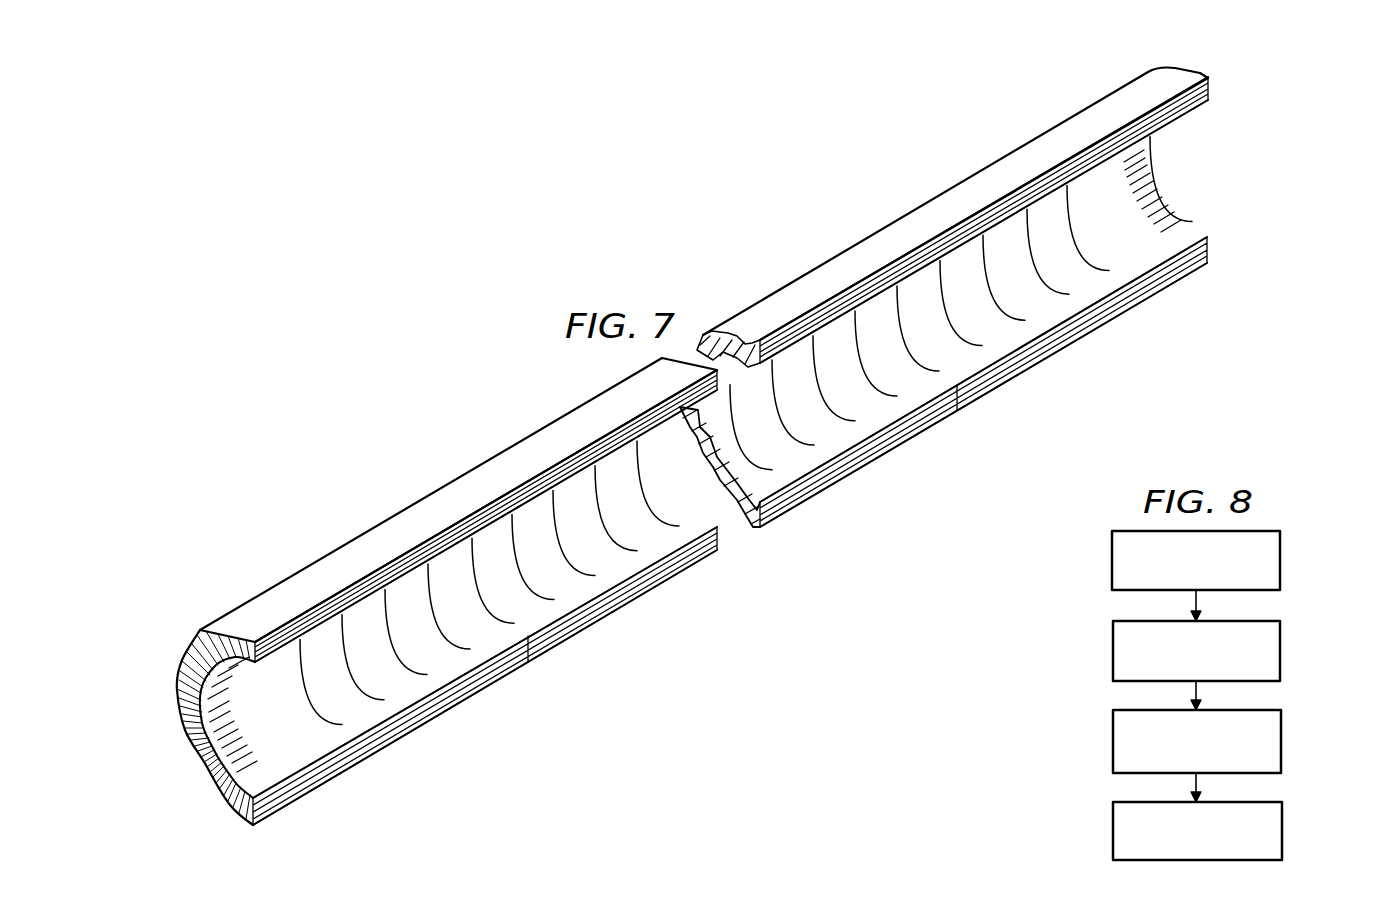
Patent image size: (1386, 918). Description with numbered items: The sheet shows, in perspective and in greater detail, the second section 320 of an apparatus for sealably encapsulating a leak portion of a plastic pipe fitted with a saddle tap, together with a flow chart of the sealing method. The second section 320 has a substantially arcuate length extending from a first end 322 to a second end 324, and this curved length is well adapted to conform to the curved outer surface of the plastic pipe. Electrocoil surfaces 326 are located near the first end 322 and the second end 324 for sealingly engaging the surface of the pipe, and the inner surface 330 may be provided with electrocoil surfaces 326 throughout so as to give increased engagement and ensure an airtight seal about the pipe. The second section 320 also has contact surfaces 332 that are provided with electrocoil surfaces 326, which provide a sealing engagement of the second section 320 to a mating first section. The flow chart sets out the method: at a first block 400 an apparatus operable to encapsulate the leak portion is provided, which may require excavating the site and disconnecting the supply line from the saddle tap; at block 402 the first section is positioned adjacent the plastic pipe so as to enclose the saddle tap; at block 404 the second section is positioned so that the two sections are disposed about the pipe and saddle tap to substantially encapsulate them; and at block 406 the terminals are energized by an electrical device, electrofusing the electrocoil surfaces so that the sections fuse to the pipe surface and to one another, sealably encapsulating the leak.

In FIG. 7, the second section 320 is at (930, 210).
In FIG. 7, the first end 322 is at (203, 760).
In FIG. 7, the second end 324 is at (1163, 172).
In FIG. 7, the electrocoil surfaces 326 is at (1101, 160).
In FIG. 7, the inner surface 330 is at (847, 445).
In FIG. 7, the contact surfaces 332 is at (880, 283).
In FIG. 8, the first block 400 is at (1282, 558).
In FIG. 8, the block 402 is at (1282, 648).
In FIG. 8, the block 404 is at (1283, 745).
In FIG. 8, the block 406 is at (1283, 835).